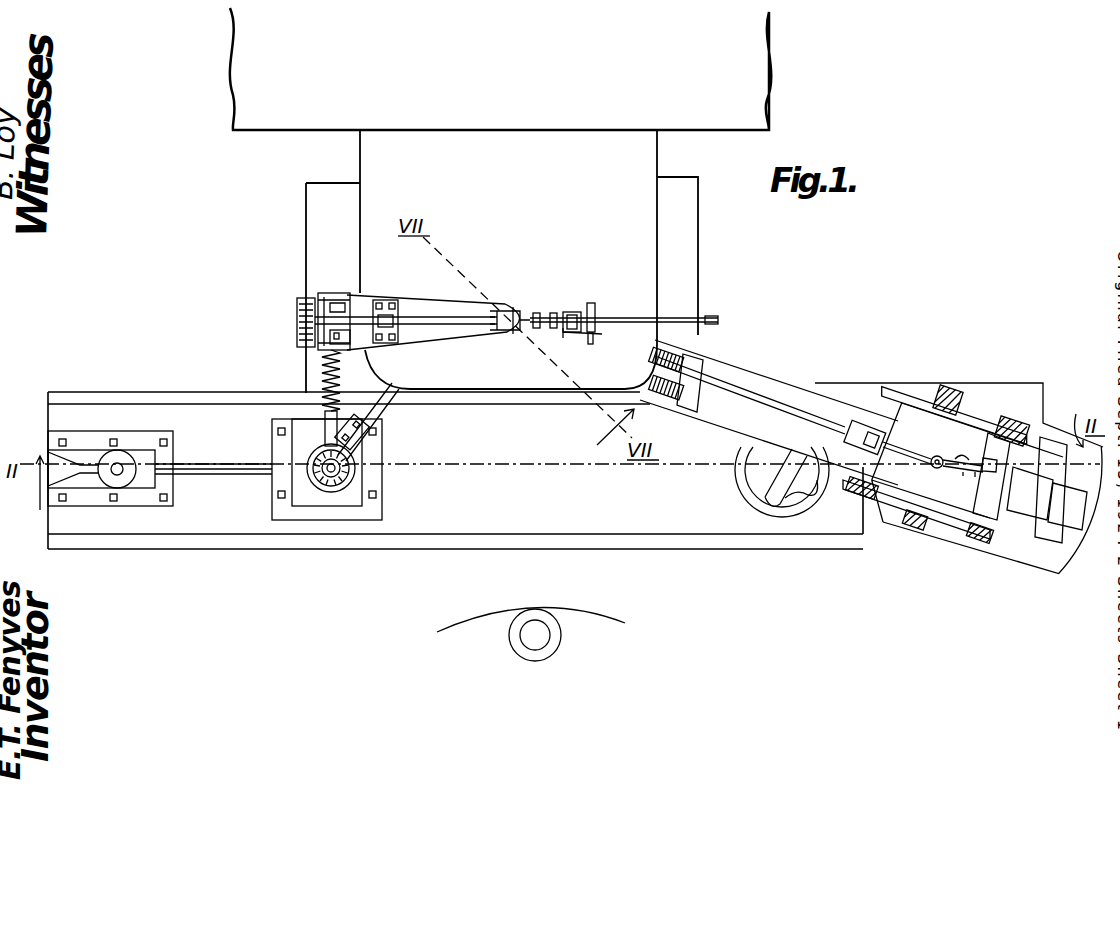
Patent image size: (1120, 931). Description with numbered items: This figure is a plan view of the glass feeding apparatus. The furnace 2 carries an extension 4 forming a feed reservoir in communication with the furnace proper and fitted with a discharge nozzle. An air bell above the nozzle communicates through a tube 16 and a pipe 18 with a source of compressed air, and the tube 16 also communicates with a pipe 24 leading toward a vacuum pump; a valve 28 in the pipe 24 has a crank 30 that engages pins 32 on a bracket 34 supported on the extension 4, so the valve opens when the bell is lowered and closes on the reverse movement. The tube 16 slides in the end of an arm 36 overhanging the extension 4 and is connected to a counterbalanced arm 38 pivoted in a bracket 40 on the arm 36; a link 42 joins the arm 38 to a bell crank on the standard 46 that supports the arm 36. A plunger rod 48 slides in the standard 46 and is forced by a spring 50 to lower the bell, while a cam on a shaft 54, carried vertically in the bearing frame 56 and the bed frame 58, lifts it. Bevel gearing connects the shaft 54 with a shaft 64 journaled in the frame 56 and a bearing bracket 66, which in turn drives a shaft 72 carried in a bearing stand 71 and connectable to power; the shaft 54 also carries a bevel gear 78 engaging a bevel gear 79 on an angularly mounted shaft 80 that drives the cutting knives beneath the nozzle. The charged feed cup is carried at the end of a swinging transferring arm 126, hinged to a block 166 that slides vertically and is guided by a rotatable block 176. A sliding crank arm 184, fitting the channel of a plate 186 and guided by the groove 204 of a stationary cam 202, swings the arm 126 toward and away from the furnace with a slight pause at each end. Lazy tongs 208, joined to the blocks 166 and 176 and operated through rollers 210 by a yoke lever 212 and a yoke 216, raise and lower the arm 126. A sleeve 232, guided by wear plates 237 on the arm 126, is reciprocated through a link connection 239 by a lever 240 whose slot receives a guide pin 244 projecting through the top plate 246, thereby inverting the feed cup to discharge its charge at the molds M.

The furnace 2 is at (476, 69).
The extension 4 is at (642, 246).
The tube 16 is at (503, 325).
The pipe 18 is at (720, 319).
The pipe 24 is at (698, 304).
The valve 28 is at (573, 312).
The crank 30 is at (597, 336).
The pins 32 is at (591, 344).
The bracket 34 is at (595, 304).
The arm 36 is at (466, 308).
The counterbalanced arm 38 is at (447, 325).
The bracket 40 is at (385, 310).
The link 42 is at (350, 338).
The standard 46 is at (355, 293).
The plunger rod 48 is at (455, 470).
The spring 50 is at (326, 378).
The shaft 54 is at (330, 505).
The bearing frame 56 is at (352, 505).
The bed frame 58 is at (160, 525).
The shaft 64 is at (206, 463).
The bearing bracket 66 is at (172, 506).
The bearing 71 is at (140, 458).
The shaft 72 is at (113, 456).
The bevel gear 78 is at (345, 482).
The bevel gear 79 is at (355, 466).
The shaft 80 is at (392, 405).
The swinging transferring arm 126 is at (712, 358).
The block 166 is at (902, 483).
The block 176 is at (1070, 522).
The sliding crank arm 184 is at (765, 518).
The plate 186 is at (763, 453).
The stationary cam 202 is at (790, 528).
The groove 204 is at (815, 528).
The lazy tongs 208 is at (938, 390).
The rollers 210 is at (980, 405).
The yoke lever 212 is at (959, 415).
The yoke 216 is at (1034, 540).
The sleeve 232 is at (633, 390).
The wear plates 237 is at (665, 404).
The link connection 239 is at (770, 405).
The lever 240 is at (883, 430).
The guide pin 244 is at (940, 470).
The top plate 246 is at (955, 450).
The molds M is at (537, 612).